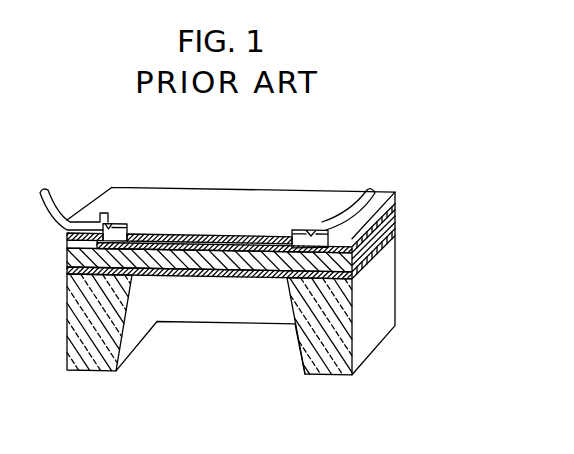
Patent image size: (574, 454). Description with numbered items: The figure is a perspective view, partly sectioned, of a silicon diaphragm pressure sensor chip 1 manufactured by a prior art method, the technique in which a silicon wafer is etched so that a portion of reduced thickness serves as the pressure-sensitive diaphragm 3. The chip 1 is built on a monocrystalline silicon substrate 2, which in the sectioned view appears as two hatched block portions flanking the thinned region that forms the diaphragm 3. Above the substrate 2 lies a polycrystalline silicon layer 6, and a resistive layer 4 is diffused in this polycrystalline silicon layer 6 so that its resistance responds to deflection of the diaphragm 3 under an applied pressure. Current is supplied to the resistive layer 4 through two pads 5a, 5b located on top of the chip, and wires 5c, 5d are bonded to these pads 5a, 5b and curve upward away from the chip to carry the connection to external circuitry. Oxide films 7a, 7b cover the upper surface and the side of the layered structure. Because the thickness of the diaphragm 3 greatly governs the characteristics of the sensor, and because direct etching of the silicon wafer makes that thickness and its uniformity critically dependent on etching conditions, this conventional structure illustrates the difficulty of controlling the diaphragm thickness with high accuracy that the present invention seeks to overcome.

The silicon diaphragm pressure sensor chip 1 is at (327, 186).
The monocrystalline silicon substrate 2 is at (388, 312).
The diaphragm 3 is at (228, 283).
The resistive layer 4 is at (189, 240).
The pad 5a is at (117, 223).
The pad 5b is at (298, 226).
The wire 5c is at (50, 188).
The wire 5d is at (374, 193).
The polycrystalline silicon layer 6 is at (388, 217).
The oxide film 7a is at (397, 191).
The oxide film 7b is at (397, 229).